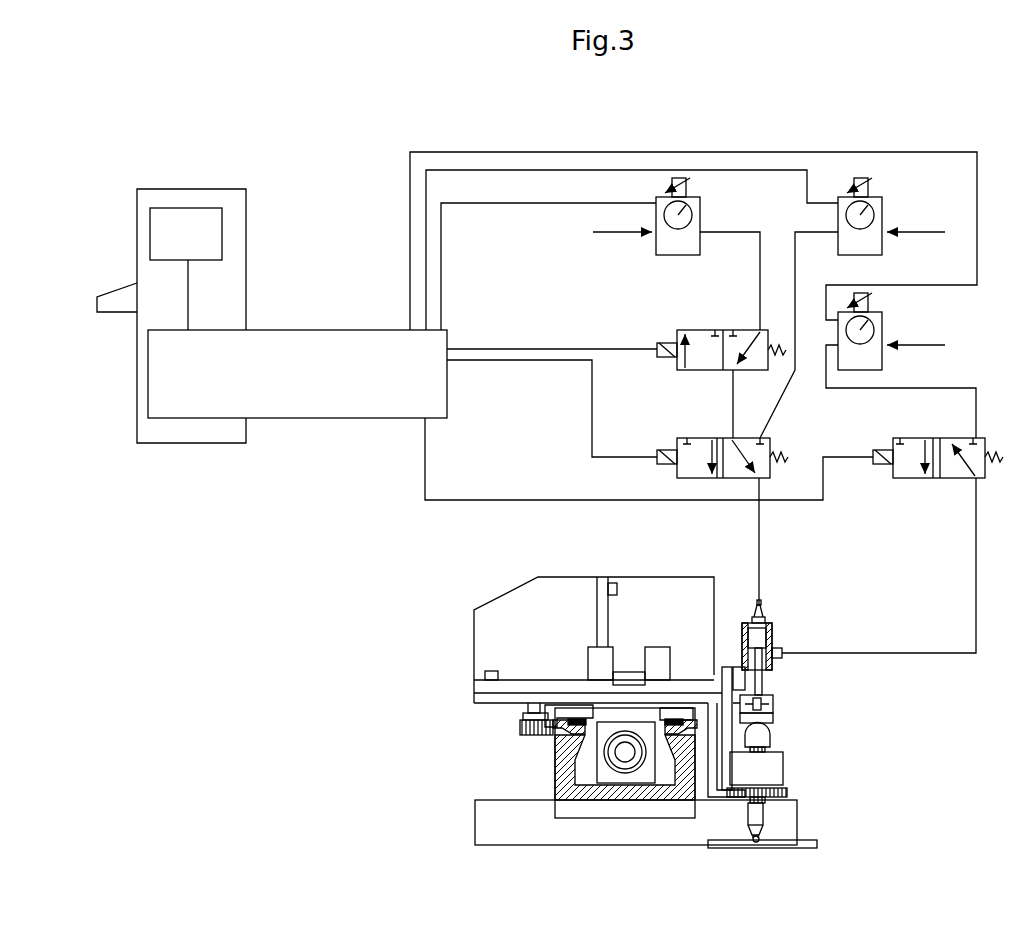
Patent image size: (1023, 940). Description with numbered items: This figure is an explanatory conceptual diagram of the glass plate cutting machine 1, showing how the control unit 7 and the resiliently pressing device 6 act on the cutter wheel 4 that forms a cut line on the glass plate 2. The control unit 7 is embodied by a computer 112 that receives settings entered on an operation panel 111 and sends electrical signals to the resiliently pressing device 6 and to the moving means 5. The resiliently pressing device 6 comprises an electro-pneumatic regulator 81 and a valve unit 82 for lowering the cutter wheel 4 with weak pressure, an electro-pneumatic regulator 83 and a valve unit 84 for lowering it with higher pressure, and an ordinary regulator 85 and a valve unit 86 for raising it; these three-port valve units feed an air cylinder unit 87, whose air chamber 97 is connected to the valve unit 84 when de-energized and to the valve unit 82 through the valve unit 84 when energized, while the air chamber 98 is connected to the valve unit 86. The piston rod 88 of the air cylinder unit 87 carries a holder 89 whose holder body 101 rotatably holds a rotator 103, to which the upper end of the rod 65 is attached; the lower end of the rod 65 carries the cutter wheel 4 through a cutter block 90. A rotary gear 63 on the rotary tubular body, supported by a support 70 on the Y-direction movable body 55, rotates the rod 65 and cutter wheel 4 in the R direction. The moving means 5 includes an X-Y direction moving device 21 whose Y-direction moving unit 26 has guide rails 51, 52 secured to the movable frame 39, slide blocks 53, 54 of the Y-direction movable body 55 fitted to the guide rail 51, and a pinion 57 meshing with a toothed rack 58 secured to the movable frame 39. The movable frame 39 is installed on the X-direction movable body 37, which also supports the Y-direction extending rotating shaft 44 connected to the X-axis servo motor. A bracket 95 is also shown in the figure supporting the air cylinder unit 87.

The glass plate cutting machine 1 is at (133, 183).
The glass plate 2 is at (778, 847).
The cutter wheel 4 is at (756, 843).
The moving means 5 is at (470, 680).
The resiliently pressing device 6 is at (690, 325).
The control unit 7 is at (133, 212).
The X-Y direction moving device 21 is at (470, 700).
The Y-direction moving unit 26 is at (497, 710).
The X-direction movable body 37 is at (480, 830).
The movable frame 39 is at (555, 790).
The rotating shaft 44 is at (623, 773).
The guide rail 51 is at (580, 720).
The guide rail 52 is at (682, 720).
The slide block 53 is at (583, 718).
The slide block 54 is at (673, 718).
The Y-direction movable body 55 is at (537, 700).
The pinion 57 is at (535, 737).
The toothed rack 58 is at (552, 730).
The rotary gear 63 is at (787, 792).
The rod 65 is at (765, 805).
The support 70 is at (782, 770).
The electro-pneumatic regulator 81 is at (702, 212).
The valve unit 82 is at (681, 339).
The electro-pneumatic regulator 83 is at (886, 212).
The valve unit 84 is at (681, 441).
The regulator 85 is at (886, 326).
The valve unit 86 is at (899, 441).
The air cylinder unit 87 is at (768, 618).
The piston rod 88 is at (767, 677).
The holder 89 is at (775, 716).
The cutter block 90 is at (747, 813).
The bracket 95 is at (743, 647).
The air chamber 97 is at (773, 633).
The air chamber 98 is at (776, 660).
The holder body 101 is at (775, 705).
The rotator 103 is at (772, 738).
The operation panel 111 is at (112, 290).
The computer 112 is at (250, 297).